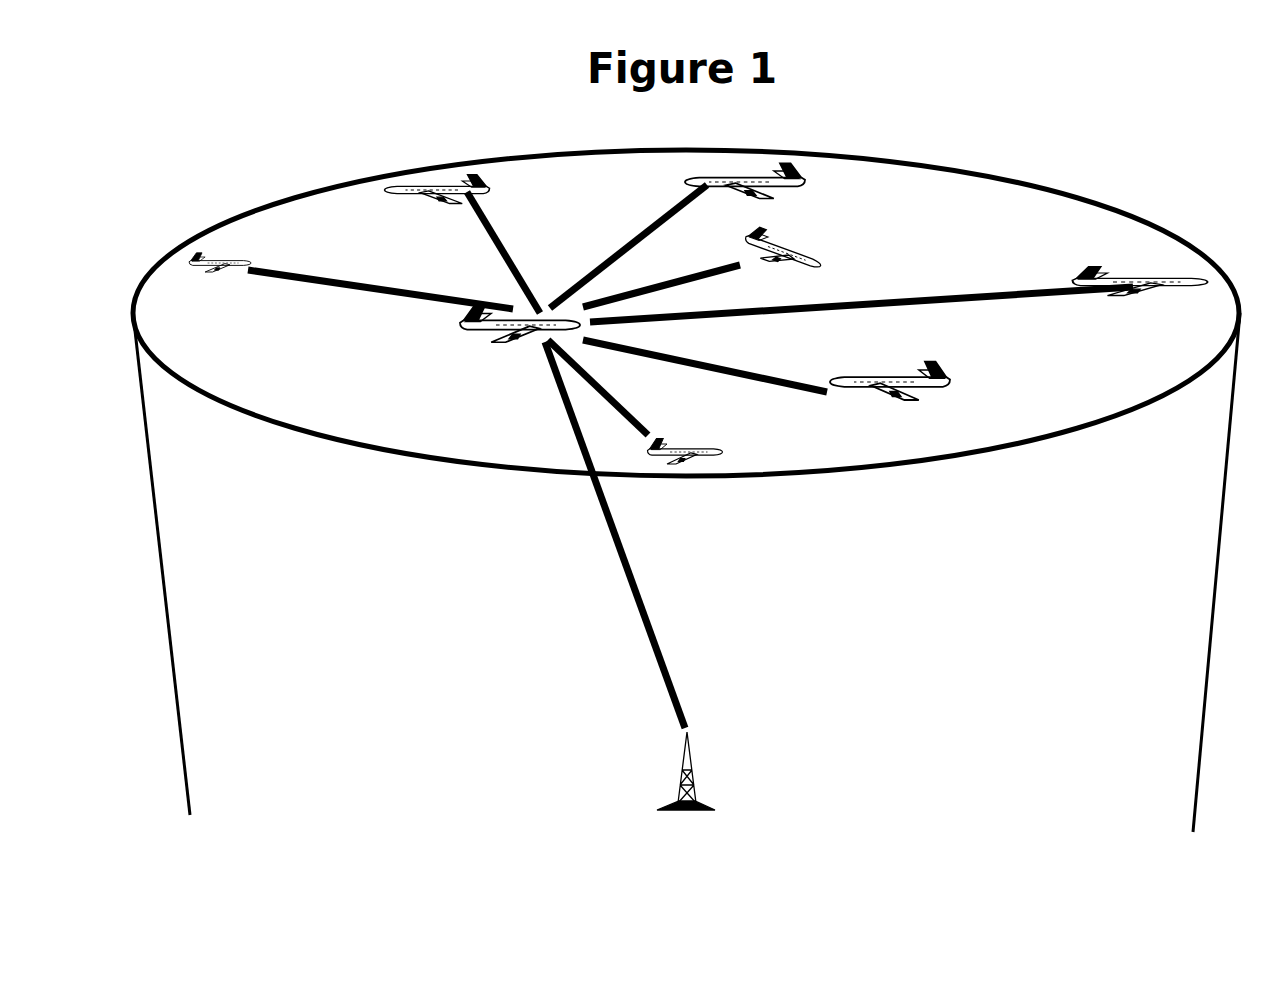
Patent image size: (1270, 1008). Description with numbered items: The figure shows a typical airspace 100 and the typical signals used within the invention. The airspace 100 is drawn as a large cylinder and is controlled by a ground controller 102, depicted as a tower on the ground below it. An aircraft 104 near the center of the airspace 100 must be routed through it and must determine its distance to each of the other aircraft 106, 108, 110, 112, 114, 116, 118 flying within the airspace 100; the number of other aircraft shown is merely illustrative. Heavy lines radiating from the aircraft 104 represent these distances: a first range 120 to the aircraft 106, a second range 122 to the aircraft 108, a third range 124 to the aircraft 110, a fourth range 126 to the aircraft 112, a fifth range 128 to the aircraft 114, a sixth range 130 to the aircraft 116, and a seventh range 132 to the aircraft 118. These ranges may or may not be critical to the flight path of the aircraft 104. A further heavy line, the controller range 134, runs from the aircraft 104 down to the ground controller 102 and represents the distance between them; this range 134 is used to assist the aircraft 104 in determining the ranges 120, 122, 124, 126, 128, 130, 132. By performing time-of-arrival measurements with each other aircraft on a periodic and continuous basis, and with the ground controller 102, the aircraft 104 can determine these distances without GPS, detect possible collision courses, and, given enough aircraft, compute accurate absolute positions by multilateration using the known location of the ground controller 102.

The airspace 100 is at (925, 135).
The ground controller 102 is at (693, 777).
The aircraft 104 is at (503, 333).
The aircraft 106 is at (222, 257).
The aircraft 108 is at (433, 187).
The aircraft 110 is at (737, 180).
The aircraft 112 is at (768, 248).
The aircraft 114 is at (1150, 290).
The aircraft 116 is at (892, 392).
The aircraft 118 is at (678, 460).
The range R1 120 is at (350, 287).
The range R2 122 is at (483, 225).
The range R3 124 is at (618, 250).
The range R4 126 is at (628, 292).
The range R5 128 is at (918, 298).
The range R6 130 is at (770, 370).
The range R7 132 is at (630, 412).
The range RC 134 is at (640, 622).